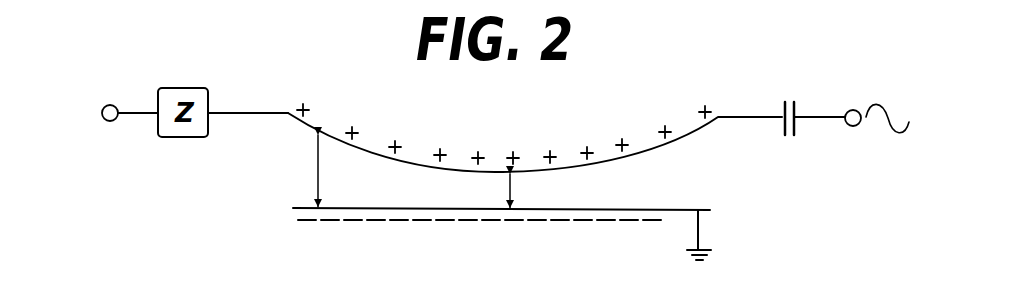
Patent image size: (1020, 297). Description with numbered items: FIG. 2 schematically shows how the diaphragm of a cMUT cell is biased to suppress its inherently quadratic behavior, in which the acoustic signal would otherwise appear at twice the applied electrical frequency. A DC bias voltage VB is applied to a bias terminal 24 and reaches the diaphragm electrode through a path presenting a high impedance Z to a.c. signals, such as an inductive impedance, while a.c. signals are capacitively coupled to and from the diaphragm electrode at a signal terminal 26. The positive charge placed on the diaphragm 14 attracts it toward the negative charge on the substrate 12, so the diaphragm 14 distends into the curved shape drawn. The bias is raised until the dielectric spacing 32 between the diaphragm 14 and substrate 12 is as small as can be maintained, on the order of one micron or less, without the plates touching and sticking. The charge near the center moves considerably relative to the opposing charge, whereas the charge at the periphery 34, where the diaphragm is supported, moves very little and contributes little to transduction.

The substrate 12 is at (689, 210).
The diaphragm 14 is at (687, 137).
The bias terminal 24 is at (110, 122).
The signal terminal 26 is at (852, 110).
The dielectric spacing 32 is at (513, 192).
The periphery 34 is at (317, 177).